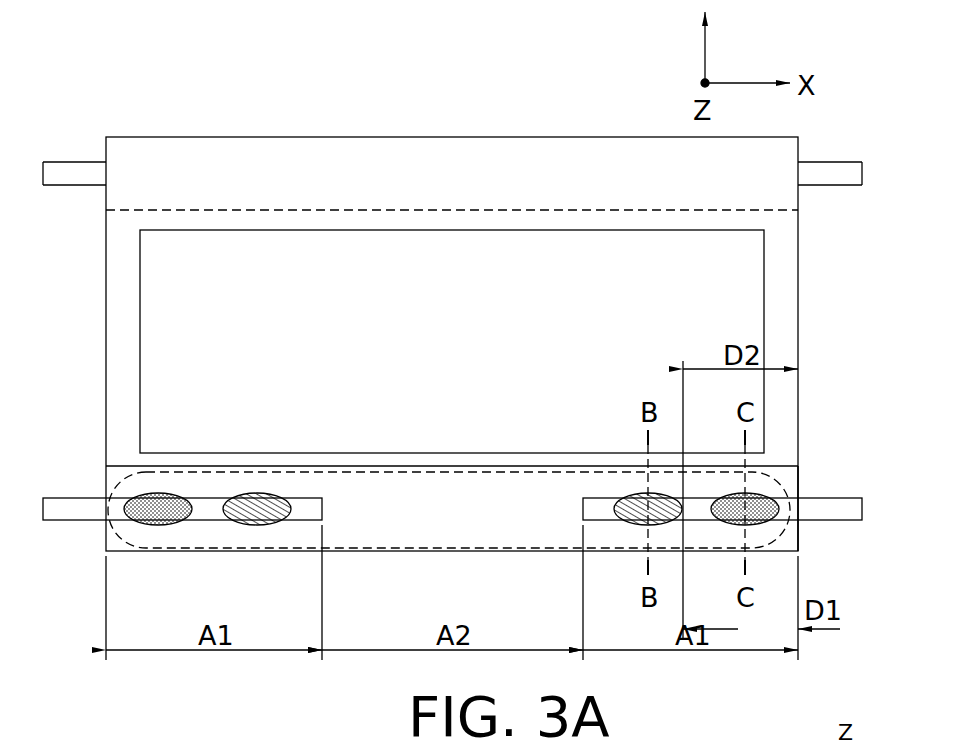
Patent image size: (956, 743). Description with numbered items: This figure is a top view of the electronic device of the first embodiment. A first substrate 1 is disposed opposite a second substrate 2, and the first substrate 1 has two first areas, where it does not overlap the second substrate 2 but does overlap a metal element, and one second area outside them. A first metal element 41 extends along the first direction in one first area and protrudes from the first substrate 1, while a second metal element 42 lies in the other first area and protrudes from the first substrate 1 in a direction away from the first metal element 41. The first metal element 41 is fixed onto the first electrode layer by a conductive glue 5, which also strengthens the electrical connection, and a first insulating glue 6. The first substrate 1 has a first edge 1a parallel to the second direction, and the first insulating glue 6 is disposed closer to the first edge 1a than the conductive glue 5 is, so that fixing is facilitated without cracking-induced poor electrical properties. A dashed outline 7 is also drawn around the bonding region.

The first substrate 1 is at (110, 483).
The first edge 1a is at (800, 535).
The second substrate 2 is at (117, 292).
The conductive glue 5 is at (632, 500).
The first insulating glue 6 is at (730, 500).
The bonding region boundary 7 is at (455, 472).
The first metal element 41 is at (833, 503).
The second metal element 42 is at (65, 512).